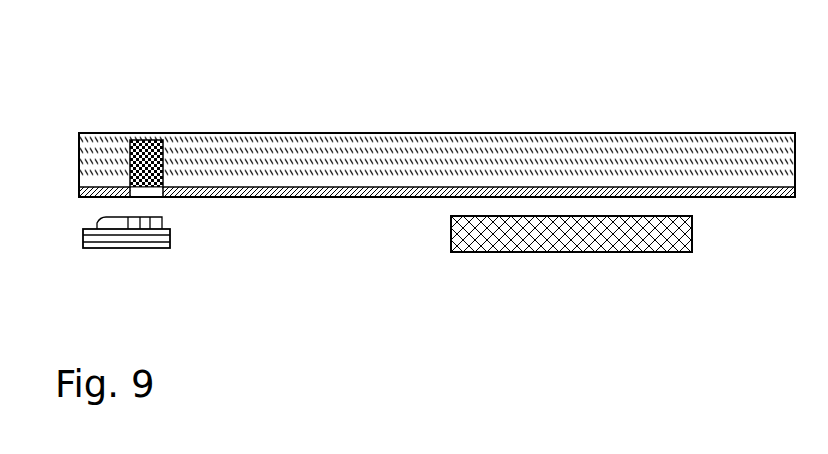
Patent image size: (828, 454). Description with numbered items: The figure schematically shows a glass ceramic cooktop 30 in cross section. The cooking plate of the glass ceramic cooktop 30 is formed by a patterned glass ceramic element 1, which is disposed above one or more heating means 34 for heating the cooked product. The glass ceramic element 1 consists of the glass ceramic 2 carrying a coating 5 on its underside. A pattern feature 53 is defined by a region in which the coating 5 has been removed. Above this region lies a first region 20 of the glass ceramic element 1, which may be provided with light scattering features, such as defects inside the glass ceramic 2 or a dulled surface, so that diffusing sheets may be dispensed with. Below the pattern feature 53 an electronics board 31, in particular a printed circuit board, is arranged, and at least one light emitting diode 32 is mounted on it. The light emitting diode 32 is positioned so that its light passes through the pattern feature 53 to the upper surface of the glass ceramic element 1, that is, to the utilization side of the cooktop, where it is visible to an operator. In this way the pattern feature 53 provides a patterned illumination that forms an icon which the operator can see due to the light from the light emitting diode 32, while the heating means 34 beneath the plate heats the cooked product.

The glass ceramic cooktop 30 is at (600, 66).
The glass ceramic element 1 is at (437, 170).
The glass ceramic 2 is at (363, 148).
The coating 5 is at (293, 198).
The first region 20 is at (160, 141).
The pattern feature 53 is at (150, 198).
The electronics board 31 is at (142, 242).
The light emitting diode 32 is at (97, 222).
The heating means 34 is at (567, 252).